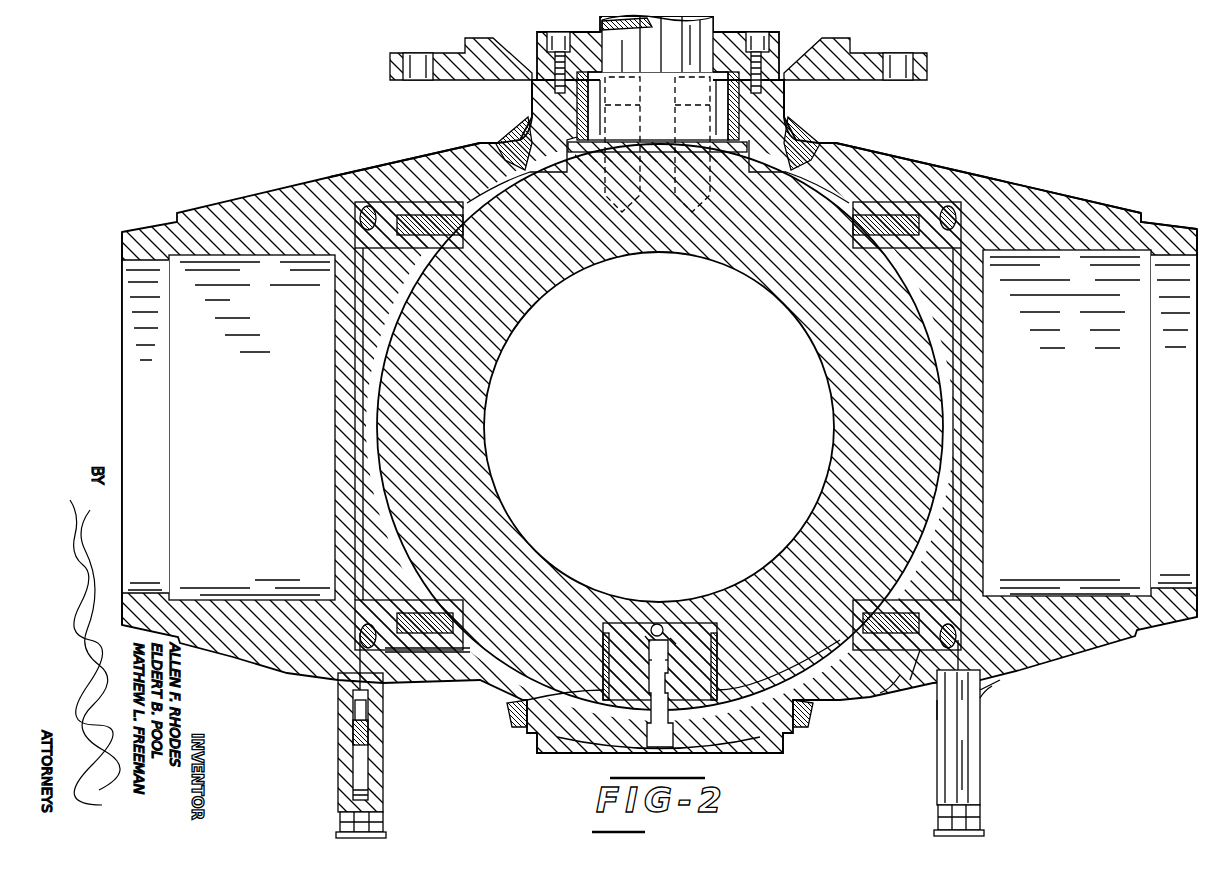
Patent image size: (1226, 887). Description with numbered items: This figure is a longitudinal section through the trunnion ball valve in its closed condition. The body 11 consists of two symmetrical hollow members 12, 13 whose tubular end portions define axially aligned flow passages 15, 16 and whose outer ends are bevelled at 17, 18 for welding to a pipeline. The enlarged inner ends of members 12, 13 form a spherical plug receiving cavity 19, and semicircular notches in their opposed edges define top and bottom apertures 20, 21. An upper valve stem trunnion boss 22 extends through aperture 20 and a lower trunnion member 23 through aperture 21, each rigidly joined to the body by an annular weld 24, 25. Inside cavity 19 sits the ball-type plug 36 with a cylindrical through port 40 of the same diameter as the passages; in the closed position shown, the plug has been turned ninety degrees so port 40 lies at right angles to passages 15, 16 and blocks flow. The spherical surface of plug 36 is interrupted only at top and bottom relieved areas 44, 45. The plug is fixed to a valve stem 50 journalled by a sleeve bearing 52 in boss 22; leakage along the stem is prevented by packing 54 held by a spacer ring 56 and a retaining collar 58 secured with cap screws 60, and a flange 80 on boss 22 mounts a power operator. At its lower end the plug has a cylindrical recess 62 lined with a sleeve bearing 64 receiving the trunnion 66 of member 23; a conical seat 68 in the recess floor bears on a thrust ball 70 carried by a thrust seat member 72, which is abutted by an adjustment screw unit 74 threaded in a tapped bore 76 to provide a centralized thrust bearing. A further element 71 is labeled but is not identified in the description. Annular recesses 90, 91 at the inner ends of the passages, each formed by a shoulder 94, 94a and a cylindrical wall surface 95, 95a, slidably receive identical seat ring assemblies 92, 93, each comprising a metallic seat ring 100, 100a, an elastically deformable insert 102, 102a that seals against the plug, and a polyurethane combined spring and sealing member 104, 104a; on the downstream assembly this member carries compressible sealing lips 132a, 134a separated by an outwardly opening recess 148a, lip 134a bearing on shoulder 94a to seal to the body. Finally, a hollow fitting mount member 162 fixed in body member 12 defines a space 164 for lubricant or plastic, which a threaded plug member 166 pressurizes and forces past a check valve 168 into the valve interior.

The body 11 is at (904, 145).
The body member 12 is at (322, 180).
The body member 13 is at (1042, 178).
The fluid flow passage 15 is at (254, 254).
The fluid flow passage 16 is at (1078, 252).
The bevelled outer end 17 is at (124, 228).
The bevelled outer end 18 is at (1195, 225).
The plug receiving cavity 19 is at (482, 163).
The top circular aperture 20 is at (550, 176).
The bottom circular aperture 21 is at (540, 697).
The upper valve stem trunnion boss 22 is at (786, 84).
The lower trunnion member 23 is at (733, 753).
The annular weld 24 is at (512, 148).
The annular weld 25 is at (519, 727).
The ball-type plug 36 is at (930, 330).
The cylindrical through port 40 is at (670, 430).
The top relieved area 44 is at (810, 170).
The bottom relieved area 45 is at (810, 702).
The valve stem 50 is at (657, 43).
The sleeve bearing 52 is at (728, 125).
The packing 54 is at (589, 92).
The spacer ring 56 is at (722, 60).
The retaining collar 58 is at (547, 44).
The cap screws 60 is at (556, 33).
The cylindrical recess 62 is at (626, 625).
The sleeve bearing 64 is at (732, 632).
The trunnion 66 is at (742, 686).
The conical seat 68 is at (658, 624).
The thrust ball 70 is at (665, 636).
The bearing surface 71 is at (646, 640).
The thrust seat member 72 is at (670, 640).
The adjustment screw assembly unit 74 is at (649, 660).
The tapped central bore 76 is at (668, 660).
The flange 80 is at (390, 60).
The annular recess 90 is at (408, 603).
The annular recess 91 is at (945, 600).
The seat ring assembly 92 is at (412, 600).
The seat ring assembly 93 is at (942, 588).
The annular shoulder 94 is at (353, 600).
The annular shoulder 94a is at (962, 606).
The internal cylindrical wall surface 95 is at (423, 650).
The internal cylindrical wall surface 95a is at (922, 660).
The seat ring 100 is at (419, 600).
The seat ring 100a is at (896, 602).
The seat ring insert 102 is at (458, 652).
The seat ring insert 102a is at (882, 696).
The combined spring and seat ring-to-valve body sealing member 104 is at (358, 625).
The combined spring and seat ring-to-valve body sealing member 104a is at (966, 632).
The sealing lip 132a is at (937, 712).
The sealing lip 134a is at (1010, 672).
The annular recess 148a is at (990, 688).
The fitting mount member 162 is at (384, 745).
The space 164 is at (352, 776).
The threaded plug member 166 is at (384, 815).
The check valve 168 is at (352, 745).